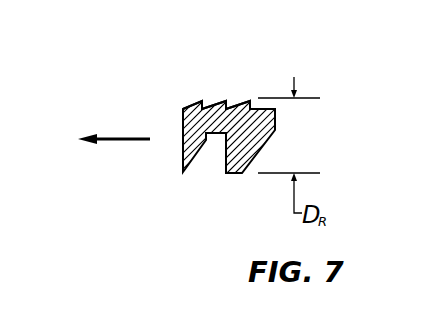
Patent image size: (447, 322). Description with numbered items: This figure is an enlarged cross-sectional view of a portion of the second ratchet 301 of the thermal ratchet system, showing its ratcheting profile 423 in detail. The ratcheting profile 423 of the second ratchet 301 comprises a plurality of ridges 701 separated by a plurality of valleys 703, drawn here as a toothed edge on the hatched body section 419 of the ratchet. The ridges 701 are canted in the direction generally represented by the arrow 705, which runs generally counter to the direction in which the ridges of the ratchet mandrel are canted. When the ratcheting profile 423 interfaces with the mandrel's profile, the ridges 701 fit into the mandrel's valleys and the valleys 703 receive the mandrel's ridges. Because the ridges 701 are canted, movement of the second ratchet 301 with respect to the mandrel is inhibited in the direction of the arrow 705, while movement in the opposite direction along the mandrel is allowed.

The second ratchet 301 is at (146, 186).
The tine 419 is at (218, 165).
The ratcheting profile 423 is at (193, 93).
The ridges 701 is at (250, 100).
The valleys 703 is at (225, 100).
The arrow 705 is at (118, 140).